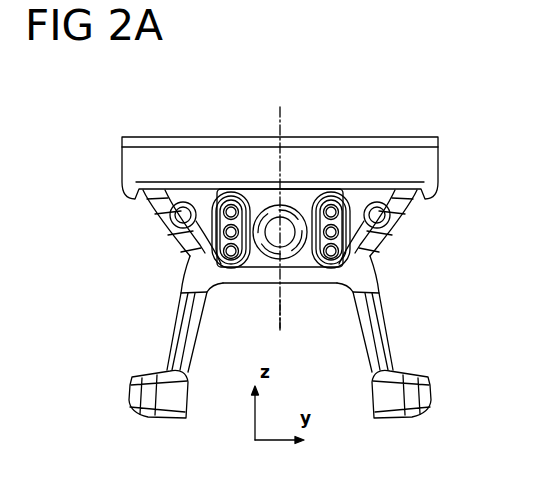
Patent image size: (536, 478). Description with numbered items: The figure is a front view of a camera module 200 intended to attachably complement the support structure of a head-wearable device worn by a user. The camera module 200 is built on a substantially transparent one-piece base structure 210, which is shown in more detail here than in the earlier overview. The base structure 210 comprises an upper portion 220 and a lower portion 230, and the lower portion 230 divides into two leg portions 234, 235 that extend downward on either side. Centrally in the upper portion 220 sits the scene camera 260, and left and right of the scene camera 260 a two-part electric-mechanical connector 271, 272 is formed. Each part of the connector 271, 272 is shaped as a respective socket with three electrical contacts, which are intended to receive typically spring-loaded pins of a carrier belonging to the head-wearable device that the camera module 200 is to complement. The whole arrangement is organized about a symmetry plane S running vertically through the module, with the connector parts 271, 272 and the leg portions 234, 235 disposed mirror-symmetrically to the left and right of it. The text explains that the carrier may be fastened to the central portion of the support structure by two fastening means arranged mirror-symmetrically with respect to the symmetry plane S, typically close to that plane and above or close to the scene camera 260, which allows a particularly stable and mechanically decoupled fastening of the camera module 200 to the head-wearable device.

The camera module 200 is at (267, 50).
The one-piece base structure 210 is at (422, 120).
The upper portion 220 is at (145, 227).
The lower portion 230 is at (411, 292).
The leg portion 234 is at (155, 325).
The leg portion 235 is at (343, 344).
The scene camera 260 is at (284, 194).
The electric-mechanical connector part 271 is at (205, 196).
The electric-mechanical connector part 272 is at (358, 188).
The symmetry plane S is at (277, 317).